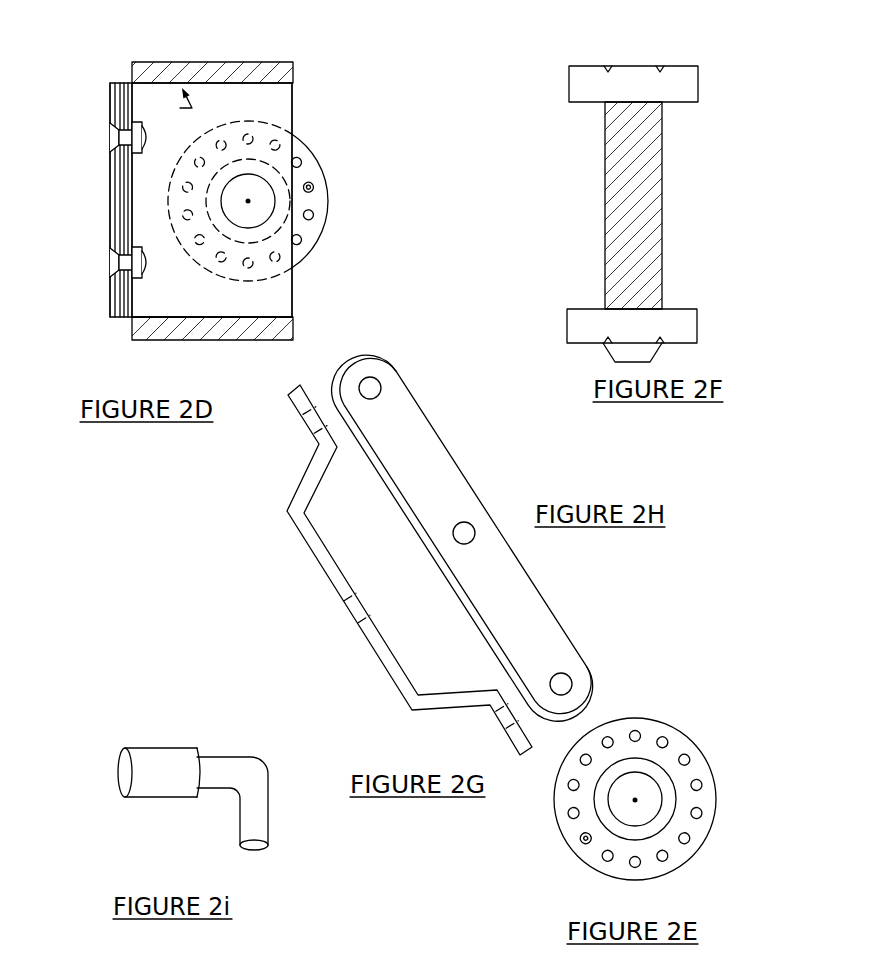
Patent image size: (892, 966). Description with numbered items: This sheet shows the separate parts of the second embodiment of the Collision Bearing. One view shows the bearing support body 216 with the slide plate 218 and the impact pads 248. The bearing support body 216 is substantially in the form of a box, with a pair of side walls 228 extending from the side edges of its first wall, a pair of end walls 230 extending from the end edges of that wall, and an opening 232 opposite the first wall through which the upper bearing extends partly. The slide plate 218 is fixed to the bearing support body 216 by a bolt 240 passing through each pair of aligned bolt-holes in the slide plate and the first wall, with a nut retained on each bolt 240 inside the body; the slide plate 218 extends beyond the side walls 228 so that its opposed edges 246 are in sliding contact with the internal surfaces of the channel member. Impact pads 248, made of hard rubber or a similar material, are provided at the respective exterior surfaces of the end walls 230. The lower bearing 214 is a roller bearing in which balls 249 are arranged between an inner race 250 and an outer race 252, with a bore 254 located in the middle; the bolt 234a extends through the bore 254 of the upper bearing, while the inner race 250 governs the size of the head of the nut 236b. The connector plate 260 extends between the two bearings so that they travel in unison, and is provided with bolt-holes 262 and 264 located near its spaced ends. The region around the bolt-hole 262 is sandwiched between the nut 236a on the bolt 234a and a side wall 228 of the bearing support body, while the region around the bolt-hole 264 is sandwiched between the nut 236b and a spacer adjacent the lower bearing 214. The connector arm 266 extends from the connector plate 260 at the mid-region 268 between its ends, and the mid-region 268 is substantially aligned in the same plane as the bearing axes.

In FIG. 2E, the bearing 214 is at (668, 772).
In FIG. 2D, the bearing support body 216 is at (94, 235).
In FIG. 2D, the slide plate 218 is at (70, 200).
In FIG. 2D, the side walls 228 is at (278, 307).
In FIG. 2D, the end walls 230 is at (212, 297).
In FIG. 2D, the opening 232 is at (303, 281).
In FIG. 2F, the bolt 234a is at (707, 80).
In FIG. 2F, the nut 236a is at (706, 331).
In FIG. 2F, the nut 236b is at (633, 205).
In FIG. 2D, the bolt 240 is at (88, 207).
In FIG. 2D, the opposed edges 246 is at (79, 200).
In FIG. 2D, the impact pads 248 is at (212, 203).
In FIG. 2D, the balls 249 is at (347, 170).
In FIG. 2E, the balls 249 is at (544, 857).
In FIG. 2D, the inner race 250 is at (299, 171).
In FIG. 2E, the inner race 250 is at (695, 786).
In FIG. 2D, the outer race 252 is at (279, 201).
In FIG. 2E, the outer race 252 is at (673, 816).
In FIG. 2D, the bore 254 is at (305, 158).
In FIG. 2E, the bore 254 is at (661, 733).
In FIG. 2H, the connector plate 260 is at (462, 538).
In FIG. 2G, the connector plate 260 is at (389, 570).
In FIG. 2H, the bolt-hole 262 is at (418, 358).
In FIG. 2G, the bolt-hole 262 is at (274, 437).
In FIG. 2H, the bolt-hole 264 is at (598, 650).
In FIG. 2G, the bolt-hole 264 is at (466, 732).
In FIG. 2I, the connector arm 266 is at (193, 760).
In FIG. 2H, the mid-region 268 is at (416, 555).
In FIG. 2G, the mid-region 268 is at (308, 605).